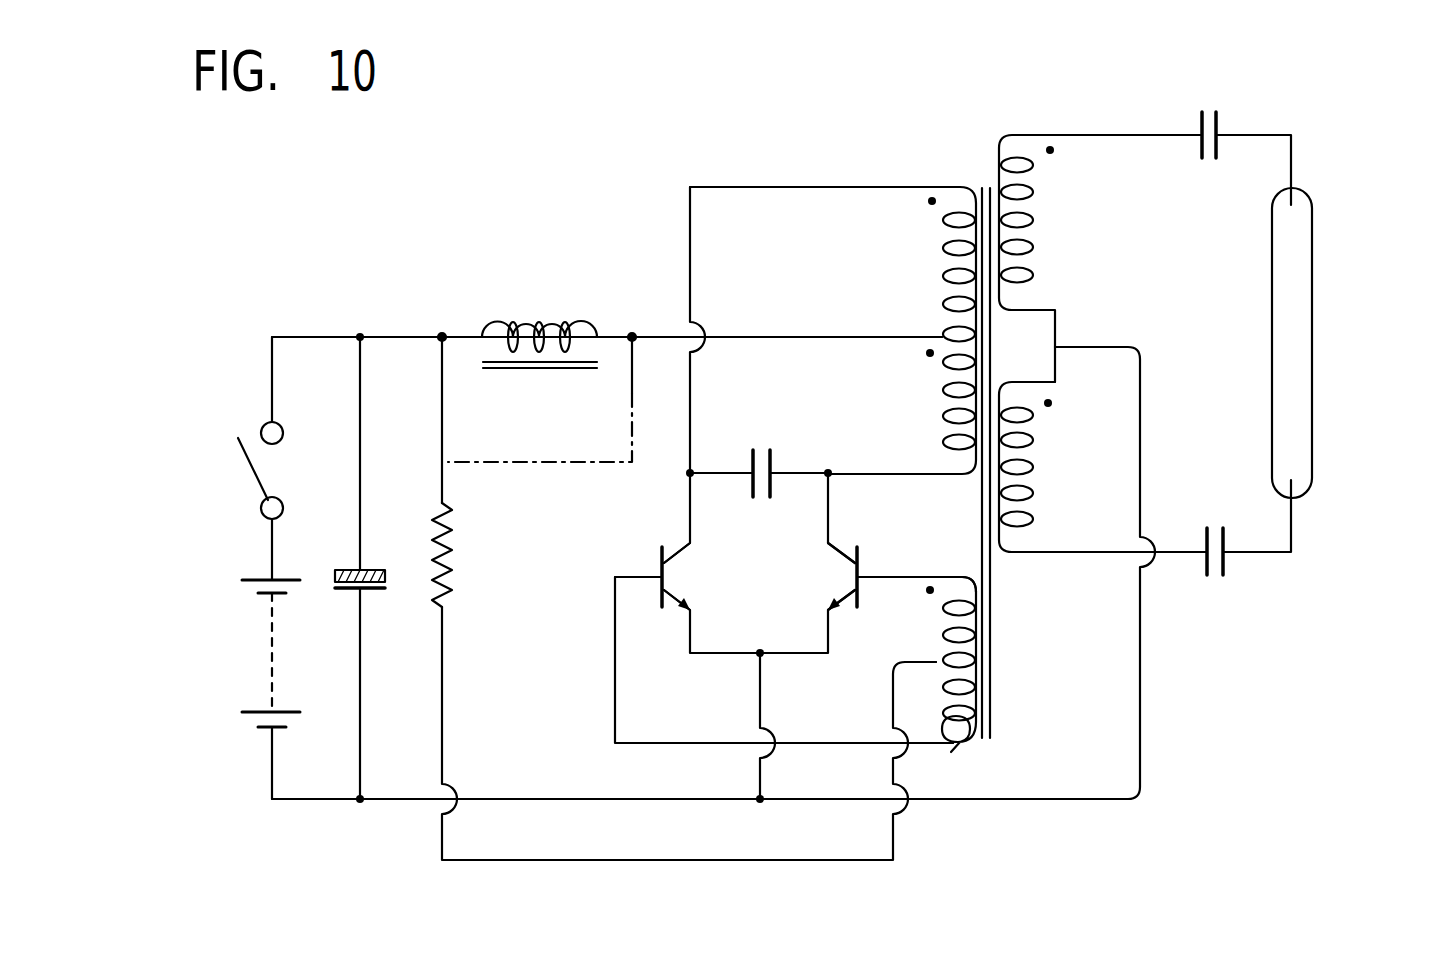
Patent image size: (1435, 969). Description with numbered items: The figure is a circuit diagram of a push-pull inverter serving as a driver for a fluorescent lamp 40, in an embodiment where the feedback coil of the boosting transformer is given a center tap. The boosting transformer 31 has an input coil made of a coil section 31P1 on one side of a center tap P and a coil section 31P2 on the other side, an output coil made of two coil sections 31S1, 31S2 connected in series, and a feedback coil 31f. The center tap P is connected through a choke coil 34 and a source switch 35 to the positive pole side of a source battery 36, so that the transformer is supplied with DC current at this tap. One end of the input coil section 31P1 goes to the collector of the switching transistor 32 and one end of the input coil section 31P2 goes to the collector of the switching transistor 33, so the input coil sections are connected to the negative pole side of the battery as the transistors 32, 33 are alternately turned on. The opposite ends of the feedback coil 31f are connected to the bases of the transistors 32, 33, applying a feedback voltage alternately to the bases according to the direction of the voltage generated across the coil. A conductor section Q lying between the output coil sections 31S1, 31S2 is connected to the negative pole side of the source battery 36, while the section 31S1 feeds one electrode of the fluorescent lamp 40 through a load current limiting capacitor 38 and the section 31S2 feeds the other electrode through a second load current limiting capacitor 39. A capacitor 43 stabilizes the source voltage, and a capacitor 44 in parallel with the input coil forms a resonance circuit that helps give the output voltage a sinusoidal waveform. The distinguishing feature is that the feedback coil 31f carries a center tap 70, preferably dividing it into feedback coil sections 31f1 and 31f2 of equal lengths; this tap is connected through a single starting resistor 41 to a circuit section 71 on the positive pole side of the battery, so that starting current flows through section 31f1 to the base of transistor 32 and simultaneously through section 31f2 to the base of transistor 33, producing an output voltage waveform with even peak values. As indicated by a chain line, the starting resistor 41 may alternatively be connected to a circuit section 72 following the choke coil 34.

The boosting transformer 31 is at (985, 188).
The input coil section 31P1 is at (943, 240).
The input coil section 31P2 is at (960, 440).
The output coil section 31S1 is at (1035, 192).
The output coil section 31S2 is at (1040, 440).
The feedback coil 31f is at (990, 608).
The feedback coil section 31f1 is at (990, 560).
The feedback coil section 31f2 is at (963, 771).
The switching transistor 32 is at (677, 586).
The switching transistor 33 is at (838, 596).
The choke coil 34 is at (535, 322).
The source switch 35 is at (272, 474).
The source battery 36 is at (272, 683).
The capacitor 38 is at (1210, 112).
The capacitor 39 is at (1218, 578).
The fluorescent lamp 40 is at (1290, 352).
The starting resistor 41 is at (455, 557).
The capacitor 43 is at (338, 572).
The capacitor 44 is at (760, 452).
The center tap 70 is at (938, 658).
The circuit section 71 is at (442, 337).
The circuit section 72 is at (632, 337).
The center tap P is at (938, 332).
The conductor section Q is at (1058, 342).